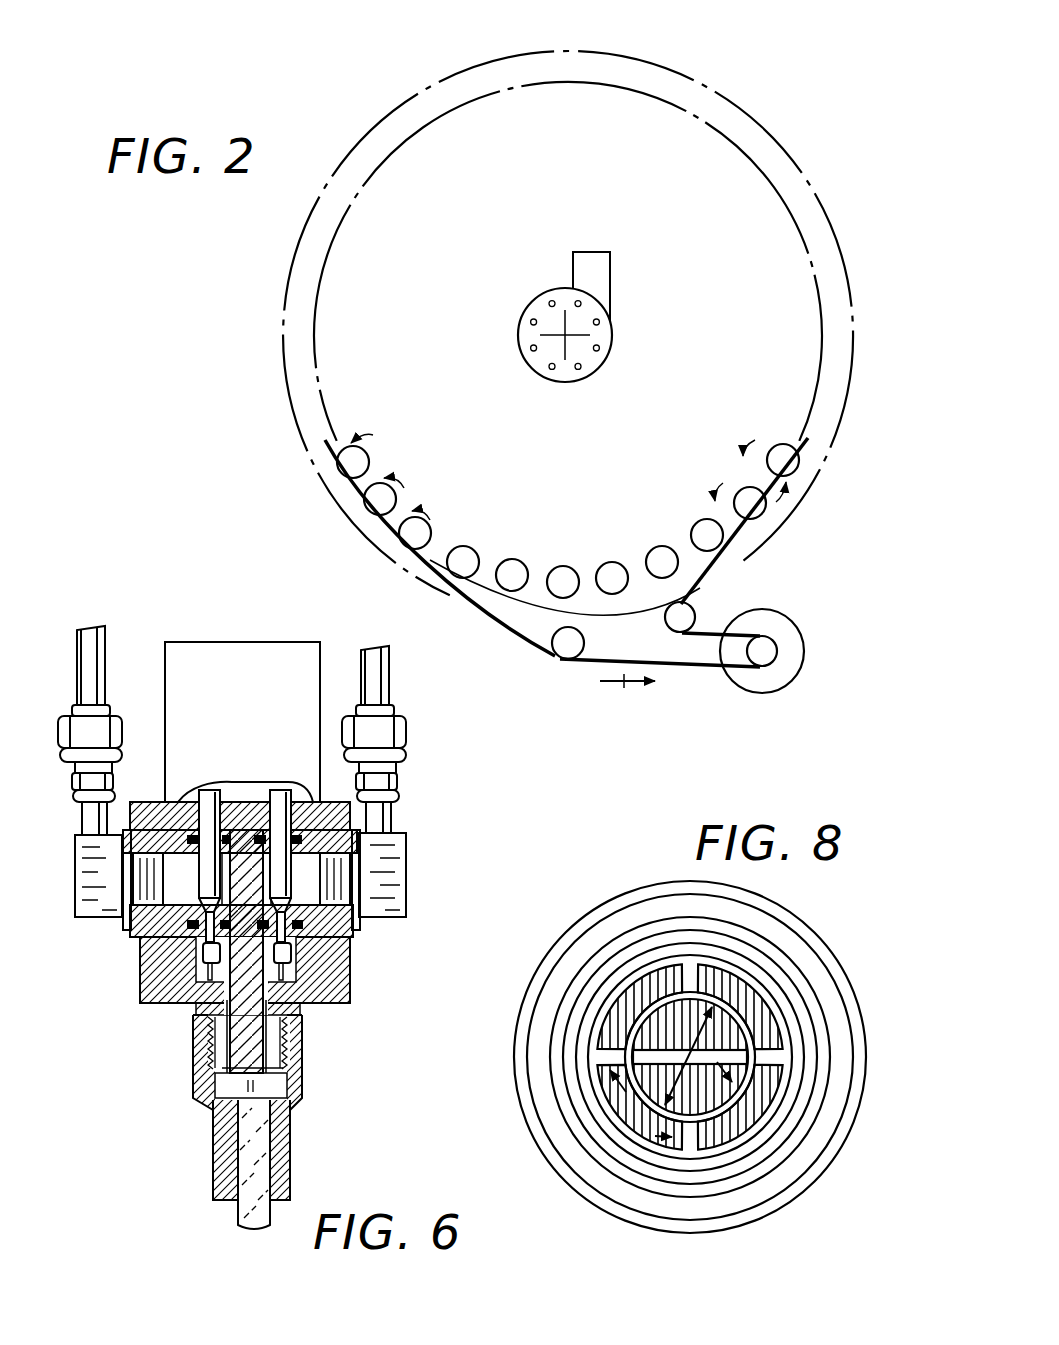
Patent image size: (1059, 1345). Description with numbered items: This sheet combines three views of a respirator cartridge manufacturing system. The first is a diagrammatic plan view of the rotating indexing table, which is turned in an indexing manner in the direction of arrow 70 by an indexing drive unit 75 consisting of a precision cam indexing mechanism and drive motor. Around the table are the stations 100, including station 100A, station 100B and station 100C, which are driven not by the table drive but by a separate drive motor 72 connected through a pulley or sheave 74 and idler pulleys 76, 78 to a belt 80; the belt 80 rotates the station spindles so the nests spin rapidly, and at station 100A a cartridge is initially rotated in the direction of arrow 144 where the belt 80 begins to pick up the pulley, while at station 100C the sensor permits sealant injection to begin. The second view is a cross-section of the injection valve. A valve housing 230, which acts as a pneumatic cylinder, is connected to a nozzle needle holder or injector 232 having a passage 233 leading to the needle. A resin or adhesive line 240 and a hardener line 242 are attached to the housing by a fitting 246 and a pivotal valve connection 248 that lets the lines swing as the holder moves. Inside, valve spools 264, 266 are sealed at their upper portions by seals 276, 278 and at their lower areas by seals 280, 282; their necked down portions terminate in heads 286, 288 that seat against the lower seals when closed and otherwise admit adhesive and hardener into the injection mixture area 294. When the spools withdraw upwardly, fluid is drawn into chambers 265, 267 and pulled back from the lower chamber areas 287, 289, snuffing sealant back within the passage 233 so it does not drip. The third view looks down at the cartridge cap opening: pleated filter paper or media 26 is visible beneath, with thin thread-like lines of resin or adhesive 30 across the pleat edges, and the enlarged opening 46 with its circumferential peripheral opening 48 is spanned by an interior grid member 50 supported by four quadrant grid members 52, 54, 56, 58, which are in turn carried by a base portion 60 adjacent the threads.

In FIG. 2, the arrow 70 is at (660, 508).
In FIG. 2, the indexing drive unit 75 is at (614, 343).
In FIG. 2, the stations 100 is at (512, 548).
In FIG. 2, the station 100A is at (492, 598).
In FIG. 2, the station 100B is at (432, 560).
In FIG. 2, the station 100C is at (402, 536).
In FIG. 2, the arrow 144 is at (426, 538).
In FIG. 2, the drive motor 72 is at (795, 630).
In FIG. 2, the pulley or sheave 74 is at (768, 653).
In FIG. 2, the idler pulley 76 is at (576, 653).
In FIG. 2, the idler pulley 78 is at (688, 614).
In FIG. 2, the belt 80 is at (515, 633).
In FIG. 6, the valve housing 230 is at (190, 645).
In FIG. 6, the nozzle needle holder or injector 232 is at (290, 1147).
In FIG. 6, the passage 233 is at (242, 1163).
In FIG. 6, the resin or adhesive line 240 is at (90, 628).
In FIG. 6, the hardener line 242 is at (388, 684).
In FIG. 6, the fitting 246 is at (405, 737).
In FIG. 6, the pivotal valve connection 248 is at (408, 877).
In FIG. 6, the valve spool 264 is at (207, 803).
In FIG. 6, the chamber 265 is at (178, 880).
In FIG. 6, the valve spool 266 is at (277, 803).
In FIG. 6, the chamber 267 is at (334, 840).
In FIG. 6, the seal 276 is at (240, 812).
In FIG. 6, the seal 278 is at (257, 817).
In FIG. 6, the seal 280 is at (140, 967).
In FIG. 6, the seal 282 is at (355, 940).
In FIG. 6, the valve head 286 is at (210, 997).
In FIG. 6, the lower chamber area 287 is at (207, 973).
In FIG. 6, the valve head 288 is at (293, 970).
In FIG. 6, the lower chamber area 289 is at (337, 970).
In FIG. 6, the injection mixture area 294 is at (305, 1097).
In FIG. 8, the pleated filter paper or media 26 is at (730, 1040).
In FIG. 8, the resin or adhesive 30 is at (747, 1073).
In FIG. 8, the enlarged opening 46 is at (690, 1057).
In FIG. 8, the circumferential peripheral opening 48 is at (633, 1130).
In FIG. 8, the interior grid member 50 is at (688, 1050).
In FIG. 8, the quadrant grid member 52 is at (657, 972).
In FIG. 8, the quadrant grid member 54 is at (777, 1058).
In FIG. 8, the quadrant grid member 56 is at (690, 1143).
In FIG. 8, the quadrant grid member 58 is at (605, 1060).
In FIG. 8, the base portion 60 is at (612, 963).